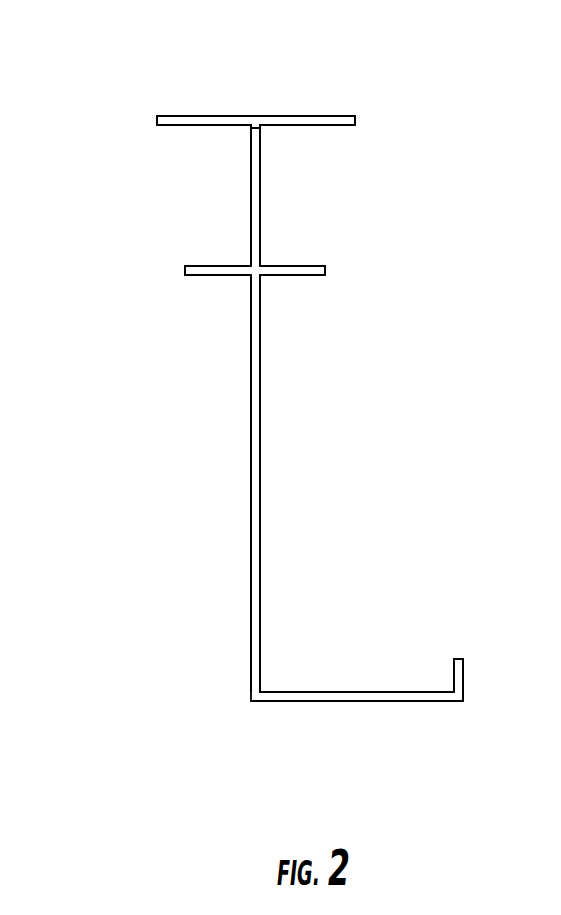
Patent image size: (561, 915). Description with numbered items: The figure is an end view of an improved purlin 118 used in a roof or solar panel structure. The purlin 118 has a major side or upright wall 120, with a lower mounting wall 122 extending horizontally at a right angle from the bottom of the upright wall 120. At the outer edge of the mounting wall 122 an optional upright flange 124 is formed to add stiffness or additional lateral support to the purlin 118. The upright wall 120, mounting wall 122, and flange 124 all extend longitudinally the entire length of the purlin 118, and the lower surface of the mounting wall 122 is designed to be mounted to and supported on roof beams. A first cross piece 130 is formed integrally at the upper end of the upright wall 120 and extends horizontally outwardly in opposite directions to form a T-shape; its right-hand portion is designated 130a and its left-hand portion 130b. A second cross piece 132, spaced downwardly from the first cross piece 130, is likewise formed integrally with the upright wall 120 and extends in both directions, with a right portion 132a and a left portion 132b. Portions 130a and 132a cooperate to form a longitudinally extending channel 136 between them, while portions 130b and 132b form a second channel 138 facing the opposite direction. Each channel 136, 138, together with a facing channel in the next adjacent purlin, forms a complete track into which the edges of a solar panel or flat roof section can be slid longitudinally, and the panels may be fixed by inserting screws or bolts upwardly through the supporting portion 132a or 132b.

The purlin 118 is at (500, 452).
The upright wall 120 is at (260, 518).
The mounting wall 122 is at (287, 692).
The upright flange 124 is at (452, 687).
The first cross piece 130 is at (186, 133).
The right portion of first cross piece 130a is at (310, 115).
The left portion of first cross piece 130b is at (187, 115).
The second cross piece 132 is at (196, 250).
The right portion of second cross piece 132a is at (288, 267).
The left portion of second cross piece 132b is at (225, 265).
The channel 136 is at (367, 224).
The second channel 138 is at (172, 184).